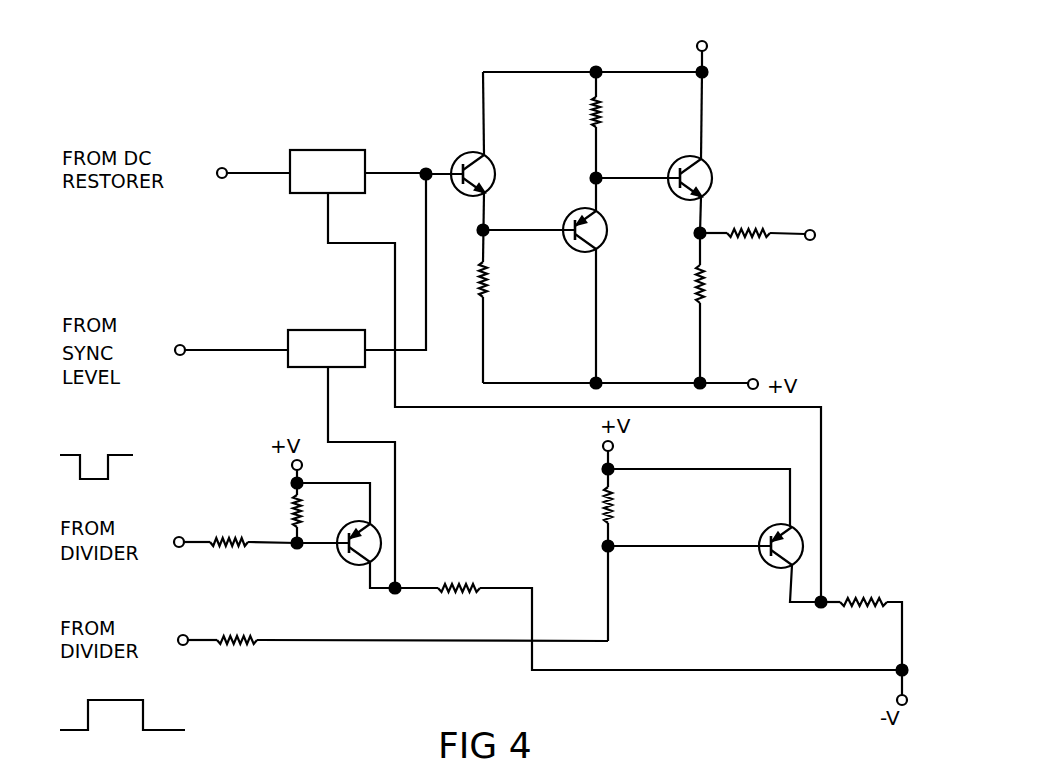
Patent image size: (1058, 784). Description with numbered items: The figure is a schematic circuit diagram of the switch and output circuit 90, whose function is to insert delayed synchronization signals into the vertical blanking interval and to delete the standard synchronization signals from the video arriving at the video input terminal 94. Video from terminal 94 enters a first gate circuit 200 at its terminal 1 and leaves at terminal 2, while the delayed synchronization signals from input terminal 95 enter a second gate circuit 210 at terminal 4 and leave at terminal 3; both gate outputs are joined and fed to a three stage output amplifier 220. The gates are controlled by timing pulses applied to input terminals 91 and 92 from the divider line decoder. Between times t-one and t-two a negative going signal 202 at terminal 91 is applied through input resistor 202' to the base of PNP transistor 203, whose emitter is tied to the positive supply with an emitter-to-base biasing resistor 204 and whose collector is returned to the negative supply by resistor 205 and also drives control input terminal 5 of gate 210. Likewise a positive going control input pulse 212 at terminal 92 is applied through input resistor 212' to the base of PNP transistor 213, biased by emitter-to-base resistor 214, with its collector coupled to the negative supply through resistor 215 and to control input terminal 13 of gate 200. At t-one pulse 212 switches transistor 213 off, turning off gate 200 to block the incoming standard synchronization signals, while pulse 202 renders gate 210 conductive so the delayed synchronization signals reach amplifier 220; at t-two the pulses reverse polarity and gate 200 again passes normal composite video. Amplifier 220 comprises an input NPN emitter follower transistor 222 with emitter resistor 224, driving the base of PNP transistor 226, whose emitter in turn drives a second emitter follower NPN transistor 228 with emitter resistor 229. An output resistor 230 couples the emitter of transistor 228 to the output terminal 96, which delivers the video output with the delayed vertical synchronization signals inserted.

The switch and output circuit 90 is at (410, 107).
The video input terminal 94 is at (225, 178).
The input terminal 95 is at (183, 346).
The output terminal 96 is at (813, 240).
The input terminal 91 is at (180, 548).
The input terminal 92 is at (183, 645).
The first gate circuit 200 is at (355, 180).
The second gate circuit 210 is at (297, 363).
The gate 200 input terminal 1 is at (258, 158).
The gate 200 output terminal 2 is at (395, 158).
The control input terminal 13 is at (574, 397).
The gate 210 output terminal 3 is at (395, 262).
The gate 210 input terminal 4 is at (236, 337).
The control input terminal 5 is at (361, 477).
The three stage output amplifier 220 is at (567, 48).
The input NPN transistor 222 is at (599, 110).
The emitter resistor 224 is at (486, 291).
The PNP transistor 226 is at (601, 240).
The NPN transistor 228 is at (707, 170).
The resistor 229 is at (704, 293).
The output resistor 230 is at (748, 240).
The negative going signal 202 is at (104, 464).
The input resistor 202' is at (253, 559).
The PNP transistor 203 is at (347, 557).
The emitter-to-base biasing resistor 204 is at (293, 510).
The resistor 205 is at (468, 586).
The positive going control input pulse 212 is at (122, 726).
The input resistor 212' is at (412, 626).
The PNP transistor 213 is at (763, 560).
The emitter-to-base biasing resistor 214 is at (613, 508).
The resistor 215 is at (860, 595).